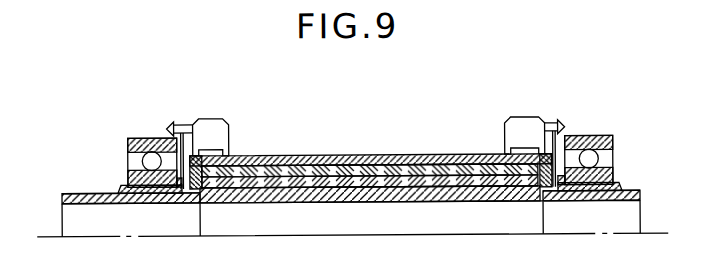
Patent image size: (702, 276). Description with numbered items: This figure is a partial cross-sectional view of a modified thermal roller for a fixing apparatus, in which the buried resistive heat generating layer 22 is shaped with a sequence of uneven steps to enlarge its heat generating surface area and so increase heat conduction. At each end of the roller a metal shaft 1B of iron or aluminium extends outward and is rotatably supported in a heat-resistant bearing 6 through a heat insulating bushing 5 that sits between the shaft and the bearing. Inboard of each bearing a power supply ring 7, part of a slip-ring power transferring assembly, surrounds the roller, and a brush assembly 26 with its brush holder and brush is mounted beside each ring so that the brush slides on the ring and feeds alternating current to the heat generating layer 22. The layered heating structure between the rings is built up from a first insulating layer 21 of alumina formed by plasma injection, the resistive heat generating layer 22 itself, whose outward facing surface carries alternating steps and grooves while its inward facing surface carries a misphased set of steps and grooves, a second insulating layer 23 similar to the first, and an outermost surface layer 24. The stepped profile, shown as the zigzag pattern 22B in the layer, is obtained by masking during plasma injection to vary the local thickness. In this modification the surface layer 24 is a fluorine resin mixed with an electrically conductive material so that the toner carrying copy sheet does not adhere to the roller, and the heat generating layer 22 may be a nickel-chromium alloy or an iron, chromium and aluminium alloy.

The metal shaft 1B is at (64, 193).
The heat insulating bushing 5 is at (124, 185).
The heat-resistant bearing 6 is at (132, 138).
The power supply ring 7 is at (232, 156).
The first insulating layer 21 is at (333, 157).
The resistive heat-generating layer 22 is at (420, 156).
The heater element 22B is at (365, 168).
The second insulating layer 23 is at (456, 163).
The surface layer 24 is at (263, 157).
The brush assembly 26 is at (210, 118).